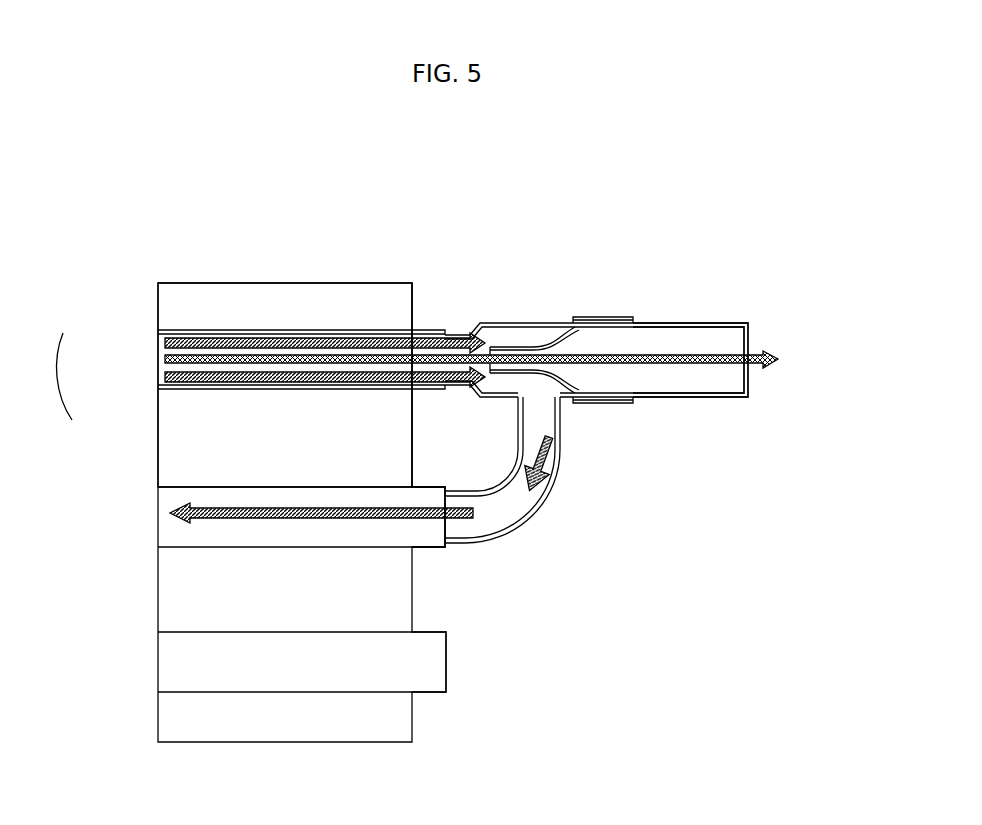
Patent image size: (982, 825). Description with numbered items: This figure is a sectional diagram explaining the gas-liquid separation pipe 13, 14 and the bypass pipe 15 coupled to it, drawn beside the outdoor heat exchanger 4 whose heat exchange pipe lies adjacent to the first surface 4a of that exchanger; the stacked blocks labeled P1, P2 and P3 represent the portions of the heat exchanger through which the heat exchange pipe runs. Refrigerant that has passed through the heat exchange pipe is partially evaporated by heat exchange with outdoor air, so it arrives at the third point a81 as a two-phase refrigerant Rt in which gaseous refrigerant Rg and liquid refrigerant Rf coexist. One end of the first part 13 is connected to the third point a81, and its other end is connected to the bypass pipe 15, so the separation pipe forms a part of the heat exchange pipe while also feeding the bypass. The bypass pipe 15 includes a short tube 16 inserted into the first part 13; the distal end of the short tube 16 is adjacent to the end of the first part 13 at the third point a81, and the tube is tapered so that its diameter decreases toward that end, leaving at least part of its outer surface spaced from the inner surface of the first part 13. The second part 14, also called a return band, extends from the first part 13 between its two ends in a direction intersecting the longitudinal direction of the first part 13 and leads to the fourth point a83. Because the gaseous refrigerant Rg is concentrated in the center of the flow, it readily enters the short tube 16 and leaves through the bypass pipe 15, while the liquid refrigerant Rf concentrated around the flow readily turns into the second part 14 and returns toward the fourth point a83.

The outdoor heat exchanger 4 is at (265, 295).
The first surface 4a is at (418, 300).
The first plate P1 is at (195, 303).
The second plate P2 is at (193, 548).
The third plate P3 is at (193, 691).
The third point a81 is at (441, 322).
The fourth point a83 is at (443, 545).
The first part 13 is at (522, 322).
The second part 14 is at (540, 515).
The bypass pipe 15 is at (710, 323).
The short tube 16 is at (553, 327).
The liquid refrigerant Rf is at (162, 377).
The gaseous refrigerant Rg is at (255, 363).
The two-phase refrigerant Rt is at (45, 376).